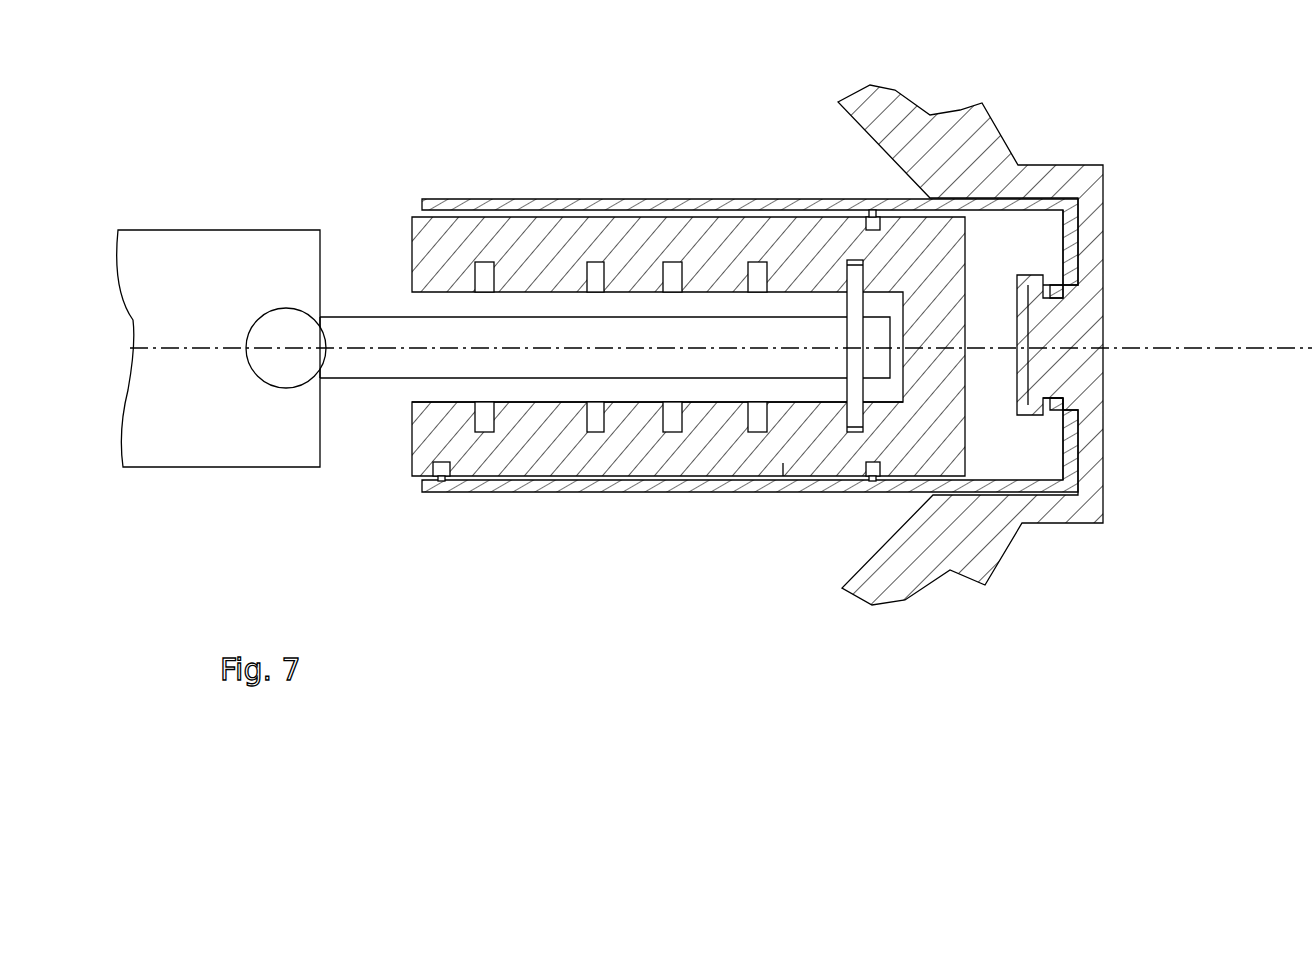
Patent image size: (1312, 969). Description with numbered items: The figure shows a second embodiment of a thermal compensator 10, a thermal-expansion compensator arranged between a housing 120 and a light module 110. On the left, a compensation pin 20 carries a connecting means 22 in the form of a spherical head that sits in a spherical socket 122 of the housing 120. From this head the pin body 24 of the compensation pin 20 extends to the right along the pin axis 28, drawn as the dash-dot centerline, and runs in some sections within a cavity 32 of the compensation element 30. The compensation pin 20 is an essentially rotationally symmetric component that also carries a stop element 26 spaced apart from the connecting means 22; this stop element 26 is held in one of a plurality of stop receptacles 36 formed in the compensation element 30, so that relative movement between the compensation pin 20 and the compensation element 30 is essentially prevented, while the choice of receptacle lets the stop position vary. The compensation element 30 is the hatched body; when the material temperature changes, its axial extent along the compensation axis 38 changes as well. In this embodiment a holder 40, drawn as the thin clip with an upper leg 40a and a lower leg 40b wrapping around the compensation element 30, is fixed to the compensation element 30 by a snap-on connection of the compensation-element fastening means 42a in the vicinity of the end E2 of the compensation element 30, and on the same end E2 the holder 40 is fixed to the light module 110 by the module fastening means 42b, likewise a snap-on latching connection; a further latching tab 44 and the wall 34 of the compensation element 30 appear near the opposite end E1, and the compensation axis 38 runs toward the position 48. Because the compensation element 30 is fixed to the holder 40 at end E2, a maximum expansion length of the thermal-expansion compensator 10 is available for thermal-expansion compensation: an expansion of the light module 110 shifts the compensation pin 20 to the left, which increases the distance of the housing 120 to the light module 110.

The thermal compensator 10 is at (322, 127).
The compensation pin 20 is at (395, 388).
The connecting means 22 is at (303, 325).
The pin body 24 is at (413, 335).
The stop element 26 is at (673, 417).
The pin axis 28 is at (1197, 334).
The compensation element 30 is at (757, 232).
The cavity 32 is at (487, 391).
The housing wall 34 is at (783, 463).
The stop receptacle 36 is at (673, 262).
The compensation axis 38 is at (1246, 344).
The holder 40 is at (662, 492).
The retaining clip upper leg 40a is at (853, 195).
The retaining clip end leg 40b is at (1053, 276).
The compensation-element fastening means 42a is at (872, 207).
The module fastening means 42b is at (1048, 288).
The latching tab 44 is at (604, 492).
The end position 48 is at (1247, 351).
The light module 110 is at (988, 153).
The housing 120 is at (230, 238).
The spherical socket 122 is at (277, 304).
The first displacement direction E1 is at (455, 432).
The end E2 is at (938, 447).